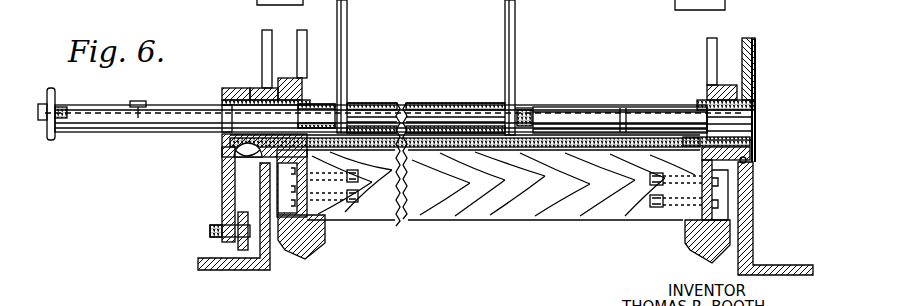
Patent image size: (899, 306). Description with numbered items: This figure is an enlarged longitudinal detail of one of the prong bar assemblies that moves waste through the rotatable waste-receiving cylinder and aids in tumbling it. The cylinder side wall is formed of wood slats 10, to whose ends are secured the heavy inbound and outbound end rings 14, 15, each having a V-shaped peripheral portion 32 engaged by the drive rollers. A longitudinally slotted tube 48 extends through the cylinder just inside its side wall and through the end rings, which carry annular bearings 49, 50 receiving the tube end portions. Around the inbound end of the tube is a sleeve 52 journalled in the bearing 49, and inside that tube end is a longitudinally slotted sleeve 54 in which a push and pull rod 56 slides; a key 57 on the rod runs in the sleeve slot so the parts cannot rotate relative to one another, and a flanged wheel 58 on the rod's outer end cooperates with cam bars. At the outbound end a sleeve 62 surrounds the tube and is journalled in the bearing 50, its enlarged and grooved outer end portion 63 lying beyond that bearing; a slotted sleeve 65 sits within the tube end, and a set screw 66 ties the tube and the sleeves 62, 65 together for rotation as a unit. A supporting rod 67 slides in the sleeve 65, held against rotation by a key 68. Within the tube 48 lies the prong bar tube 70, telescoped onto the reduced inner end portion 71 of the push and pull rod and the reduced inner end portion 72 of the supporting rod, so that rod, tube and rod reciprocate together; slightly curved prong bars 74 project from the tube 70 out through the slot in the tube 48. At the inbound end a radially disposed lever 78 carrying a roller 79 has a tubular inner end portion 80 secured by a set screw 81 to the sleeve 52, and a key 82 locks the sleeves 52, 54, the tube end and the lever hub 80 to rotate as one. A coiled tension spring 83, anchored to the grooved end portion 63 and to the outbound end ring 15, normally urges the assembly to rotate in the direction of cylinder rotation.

The slats 10 is at (487, 210).
The inbound end ring 14 is at (310, 200).
The outbound end ring 15 is at (715, 188).
The V-shaped peripheral portions 32 is at (318, 246).
The longitudinally slotted tube 48 is at (455, 145).
The annular bearing 49 is at (312, 87).
The annular bearing 50 is at (707, 103).
The sleeve 52 is at (222, 100).
The longitudinally slotted sleeve 54 is at (222, 141).
The push and pull rod 56 is at (144, 133).
The key 57 is at (141, 100).
The flanged wheel 58 is at (55, 100).
The sleeve 62 is at (707, 90).
The enlarged and grooved outer end portion 63 is at (754, 106).
The longitudinally slotted sleeve 65 is at (753, 152).
The set screw 66 is at (745, 142).
The supporting rod 67 is at (580, 116).
The key 68 is at (622, 116).
The prong bar tube 70 is at (447, 104).
The reduced inner end portion 71 is at (332, 116).
The reduced inner end portion 72 is at (524, 118).
The prong bars 74 is at (505, 22).
The lever 78 is at (222, 177).
The roller 79 is at (238, 243).
The tubular inner end portion 80 is at (226, 88).
The set screw 81 is at (247, 88).
The key 82 is at (250, 150).
The coiled tension spring 83 is at (754, 86).